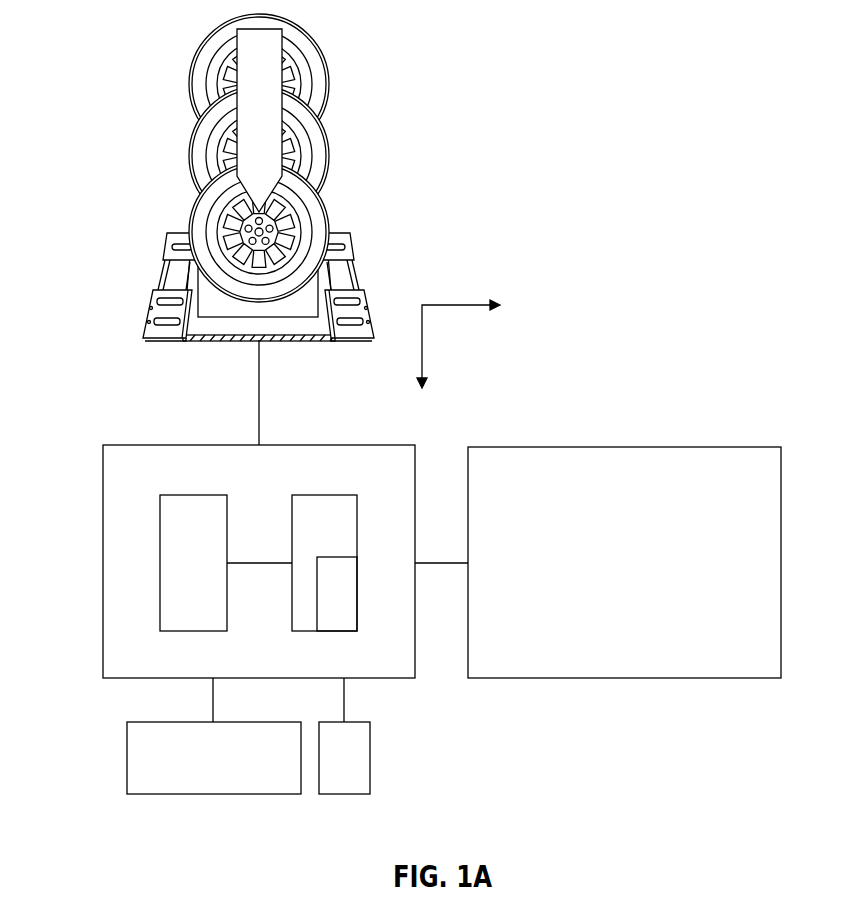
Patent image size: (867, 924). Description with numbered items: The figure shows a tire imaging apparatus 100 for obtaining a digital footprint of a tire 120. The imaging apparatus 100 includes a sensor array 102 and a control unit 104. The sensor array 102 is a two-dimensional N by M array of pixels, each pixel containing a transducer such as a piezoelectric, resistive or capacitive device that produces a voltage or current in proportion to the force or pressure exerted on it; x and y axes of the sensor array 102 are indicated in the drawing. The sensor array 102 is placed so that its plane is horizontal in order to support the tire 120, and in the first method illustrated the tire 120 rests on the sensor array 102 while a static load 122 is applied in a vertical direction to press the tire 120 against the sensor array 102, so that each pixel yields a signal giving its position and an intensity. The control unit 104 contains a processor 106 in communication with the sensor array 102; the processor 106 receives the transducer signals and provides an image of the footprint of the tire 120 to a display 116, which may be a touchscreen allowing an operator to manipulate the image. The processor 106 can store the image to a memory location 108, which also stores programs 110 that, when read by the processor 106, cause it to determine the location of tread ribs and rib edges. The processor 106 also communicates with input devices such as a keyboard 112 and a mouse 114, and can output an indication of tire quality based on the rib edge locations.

The tire imaging apparatus 100 is at (412, 417).
The sensor array 102 is at (305, 294).
The control unit 104 is at (278, 569).
The processor 106 is at (177, 495).
The memory location 108 is at (323, 495).
The programs 110 is at (347, 557).
The keyboard 112 is at (127, 760).
The mouse 114 is at (343, 796).
The display 116 is at (625, 447).
The tire 120 is at (330, 204).
The static load 122 is at (263, 57).